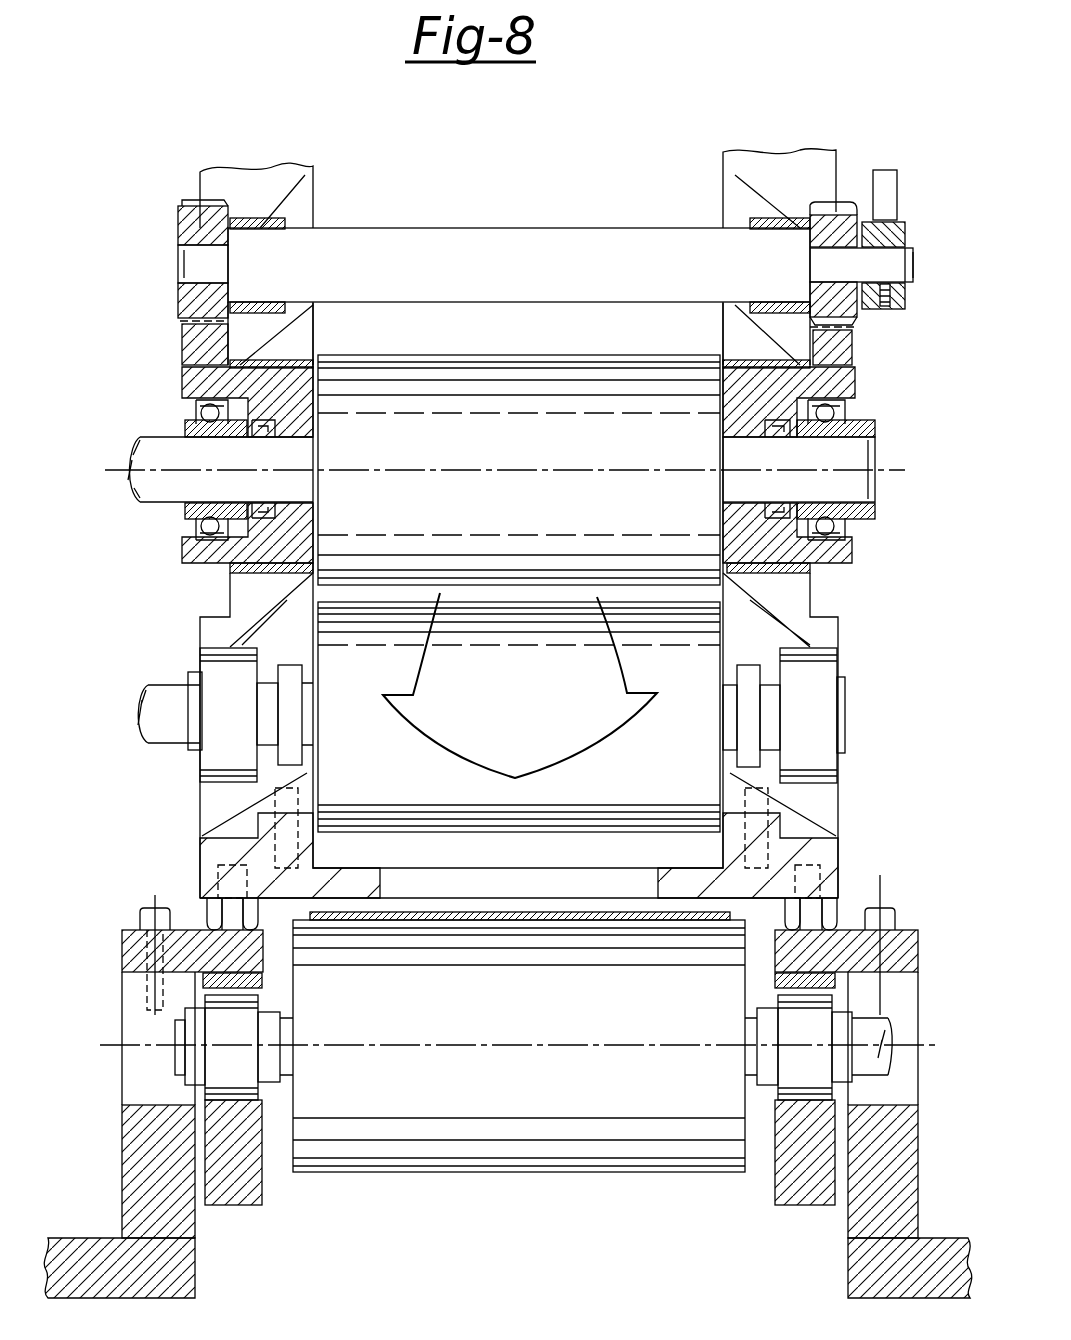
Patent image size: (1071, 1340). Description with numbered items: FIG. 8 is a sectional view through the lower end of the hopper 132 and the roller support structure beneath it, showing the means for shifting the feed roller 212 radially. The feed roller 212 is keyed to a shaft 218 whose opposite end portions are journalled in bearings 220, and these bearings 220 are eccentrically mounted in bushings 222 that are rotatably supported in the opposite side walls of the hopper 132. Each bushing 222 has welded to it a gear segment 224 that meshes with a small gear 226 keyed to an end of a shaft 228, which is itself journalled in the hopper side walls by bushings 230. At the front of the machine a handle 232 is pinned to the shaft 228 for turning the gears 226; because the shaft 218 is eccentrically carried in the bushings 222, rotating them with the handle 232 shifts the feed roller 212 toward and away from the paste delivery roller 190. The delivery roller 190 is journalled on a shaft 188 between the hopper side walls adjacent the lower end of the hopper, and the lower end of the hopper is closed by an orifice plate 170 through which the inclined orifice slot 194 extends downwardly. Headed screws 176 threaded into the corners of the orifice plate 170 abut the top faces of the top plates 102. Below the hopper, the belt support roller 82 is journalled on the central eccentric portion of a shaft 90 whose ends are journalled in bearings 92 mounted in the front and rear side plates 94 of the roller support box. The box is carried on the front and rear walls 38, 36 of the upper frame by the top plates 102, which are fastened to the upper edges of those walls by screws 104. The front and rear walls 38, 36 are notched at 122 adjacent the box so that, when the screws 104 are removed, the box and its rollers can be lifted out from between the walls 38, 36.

The rear wall of upper frame 36 is at (135, 1158).
The front wall of upper frame 38 is at (905, 1156).
The roller 82 is at (548, 1160).
The shaft 90 is at (185, 1030).
The bearing 92 is at (265, 1062).
The side plate 94 is at (240, 1200).
The top plate 102 is at (908, 936).
The screw 104 is at (145, 912).
The notch 122 is at (135, 1095).
The hopper 132 is at (842, 156).
The orifice plate 170 is at (838, 852).
The headed screw 176 is at (212, 912).
The shaft 188 is at (175, 748).
The paste delivery roller 190 is at (552, 822).
The orifice slot 194 is at (602, 892).
The feed roller 212 is at (668, 575).
The shaft 218 is at (150, 500).
The bearing 220 is at (183, 428).
The bushing 222 is at (190, 560).
The gear segment 224 is at (190, 345).
The small gear 226 is at (238, 222).
The shaft 228 is at (522, 240).
The bushing 230 is at (243, 232).
The handle 232 is at (885, 182).